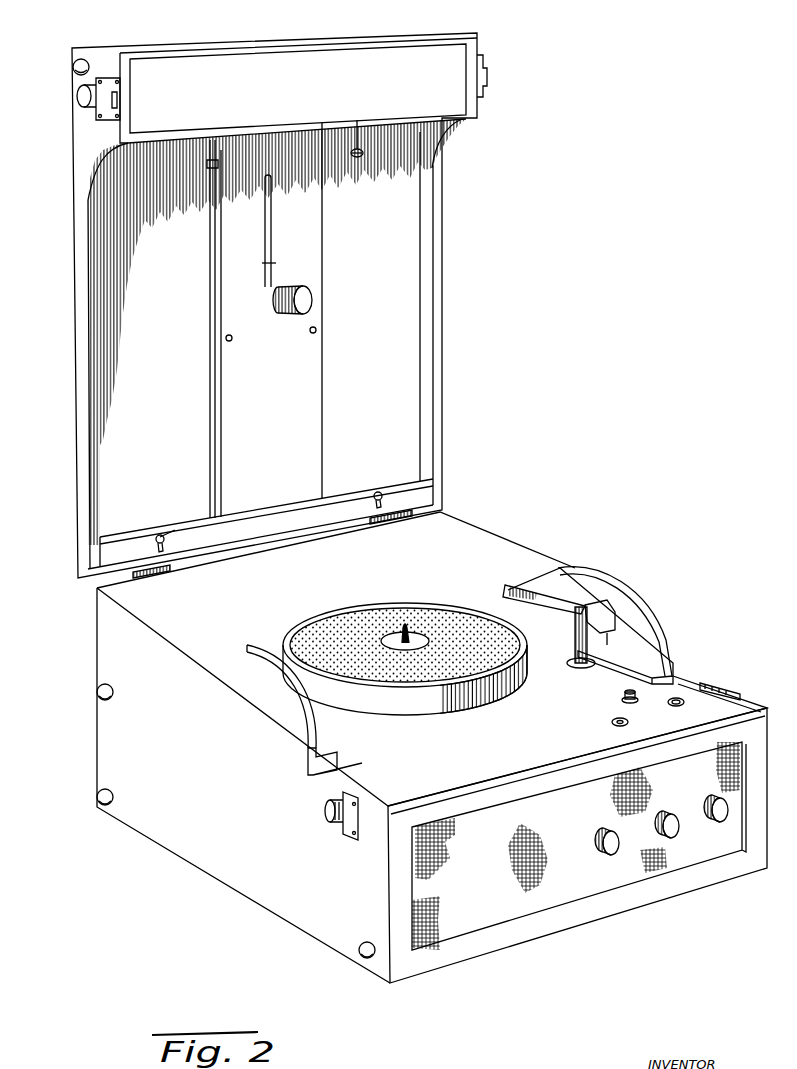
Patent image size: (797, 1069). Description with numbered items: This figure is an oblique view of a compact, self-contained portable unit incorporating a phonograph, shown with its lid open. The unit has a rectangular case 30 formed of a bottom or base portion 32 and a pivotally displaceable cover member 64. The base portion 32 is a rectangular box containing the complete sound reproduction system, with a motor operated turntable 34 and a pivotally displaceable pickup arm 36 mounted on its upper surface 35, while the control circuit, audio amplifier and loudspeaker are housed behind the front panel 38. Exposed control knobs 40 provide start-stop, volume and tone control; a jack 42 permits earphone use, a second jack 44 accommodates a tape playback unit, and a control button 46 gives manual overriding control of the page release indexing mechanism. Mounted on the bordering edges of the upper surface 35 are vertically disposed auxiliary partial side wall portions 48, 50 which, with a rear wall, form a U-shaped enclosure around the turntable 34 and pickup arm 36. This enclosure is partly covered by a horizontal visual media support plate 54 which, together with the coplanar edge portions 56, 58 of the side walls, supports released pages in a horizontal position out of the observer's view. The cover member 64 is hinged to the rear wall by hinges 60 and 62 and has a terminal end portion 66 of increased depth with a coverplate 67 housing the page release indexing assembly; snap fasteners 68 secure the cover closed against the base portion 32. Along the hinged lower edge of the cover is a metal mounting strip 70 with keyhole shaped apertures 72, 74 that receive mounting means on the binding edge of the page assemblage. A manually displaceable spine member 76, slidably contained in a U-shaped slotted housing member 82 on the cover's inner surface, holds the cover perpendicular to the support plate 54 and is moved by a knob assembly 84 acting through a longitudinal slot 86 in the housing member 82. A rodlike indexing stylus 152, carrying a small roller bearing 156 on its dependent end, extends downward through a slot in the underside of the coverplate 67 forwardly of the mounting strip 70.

The rectangular case 30 is at (553, 936).
The bottom or base portion 32 is at (163, 805).
The turntable 34 is at (444, 716).
The upper surface 35 is at (327, 770).
The pickup arm 36 is at (617, 600).
The front panel 38 is at (465, 905).
The control knobs 40 is at (688, 922).
The jack 42 is at (613, 721).
The second jack 44 is at (677, 700).
The control button 46 is at (624, 697).
The auxiliary partial side wall portion 48 is at (160, 642).
The auxiliary partial side wall portion 50 is at (571, 587).
The visual media support plate 54 is at (510, 556).
The coplanar edge portion 56 is at (258, 660).
The coplanar edge portion 58 is at (622, 572).
The hinge 60 is at (163, 572).
The hinge 62 is at (403, 522).
The cover member 64 is at (70, 357).
The terminal end portion 66 is at (70, 75).
The coverplate 67 is at (293, 65).
The snap fasteners 68 is at (100, 108).
The mounting strip 70 is at (175, 528).
The keyhole shaped aperture 72 is at (165, 541).
The keyhole shaped aperture 74 is at (377, 501).
The spine member 76 is at (272, 273).
The housing member 82 is at (228, 388).
The knob assembly 84 is at (307, 295).
The slot 86 is at (265, 213).
The indexing stylus 152 is at (210, 162).
The roller bearing 156 is at (360, 158).